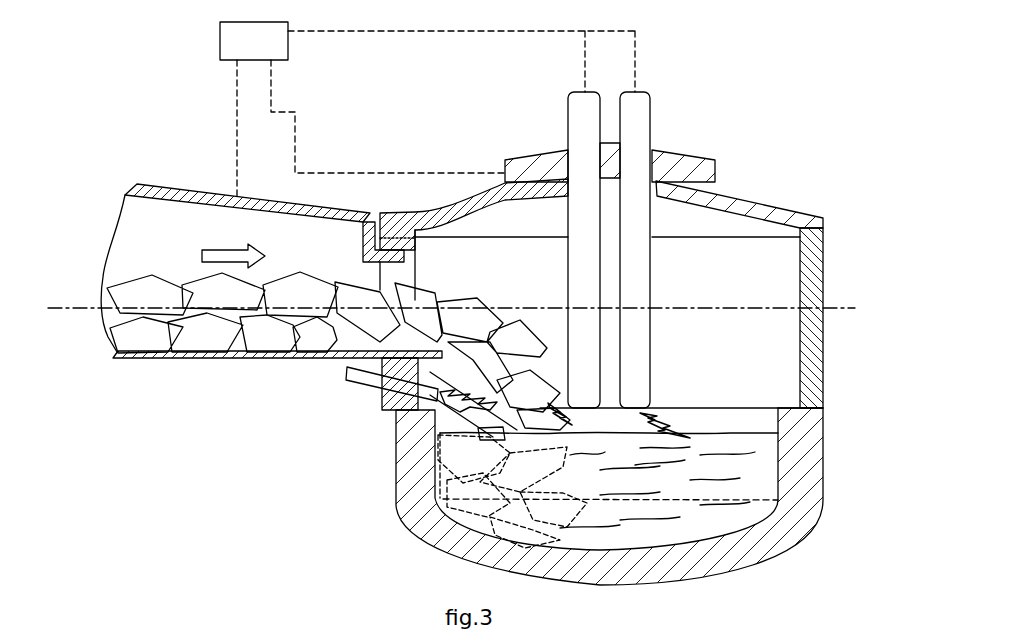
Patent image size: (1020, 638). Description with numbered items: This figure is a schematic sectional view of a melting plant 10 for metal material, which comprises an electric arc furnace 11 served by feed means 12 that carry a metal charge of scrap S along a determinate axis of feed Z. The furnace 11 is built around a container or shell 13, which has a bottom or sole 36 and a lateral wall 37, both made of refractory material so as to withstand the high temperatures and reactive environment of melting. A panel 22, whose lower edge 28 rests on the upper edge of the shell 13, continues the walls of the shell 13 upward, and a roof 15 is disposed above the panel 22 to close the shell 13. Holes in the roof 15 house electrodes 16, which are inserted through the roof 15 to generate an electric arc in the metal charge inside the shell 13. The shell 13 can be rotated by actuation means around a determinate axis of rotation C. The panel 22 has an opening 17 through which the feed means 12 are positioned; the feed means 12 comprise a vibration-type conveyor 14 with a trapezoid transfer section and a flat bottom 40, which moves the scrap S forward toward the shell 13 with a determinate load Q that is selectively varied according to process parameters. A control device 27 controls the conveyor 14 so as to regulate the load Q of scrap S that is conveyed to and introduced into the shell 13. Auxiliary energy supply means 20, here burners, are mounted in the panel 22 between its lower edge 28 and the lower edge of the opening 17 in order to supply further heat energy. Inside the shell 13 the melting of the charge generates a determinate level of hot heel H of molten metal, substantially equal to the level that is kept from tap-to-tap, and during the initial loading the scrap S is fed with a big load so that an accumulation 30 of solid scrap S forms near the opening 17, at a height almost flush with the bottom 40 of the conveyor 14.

The melting plant 10 is at (368, 130).
The electric arc furnace 11 is at (773, 202).
The feed means 12 is at (214, 192).
The shell 13 is at (411, 485).
The conveyor 14 is at (138, 220).
The roof 15 is at (478, 197).
The electrodes 16 is at (640, 104).
The opening 17 is at (407, 362).
The auxiliary energy supply means 20 is at (385, 384).
The panel 22 is at (812, 263).
The control device 27 is at (236, 42).
The lower edge 28 is at (812, 407).
The accumulation 30 is at (505, 307).
The sole 36 is at (693, 538).
The lateral wall 37 is at (776, 460).
The flat bottom 40 is at (212, 352).
The scrap S is at (142, 295).
The load Q is at (233, 253).
The axis of feed Z is at (90, 309).
The axis of rotation C is at (838, 308).
The hot heel H is at (748, 501).